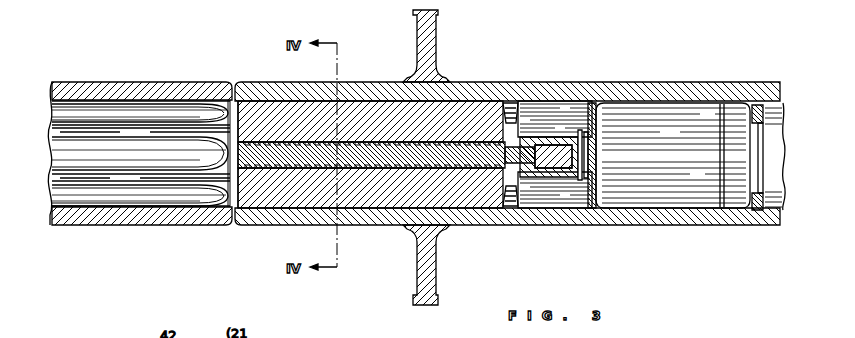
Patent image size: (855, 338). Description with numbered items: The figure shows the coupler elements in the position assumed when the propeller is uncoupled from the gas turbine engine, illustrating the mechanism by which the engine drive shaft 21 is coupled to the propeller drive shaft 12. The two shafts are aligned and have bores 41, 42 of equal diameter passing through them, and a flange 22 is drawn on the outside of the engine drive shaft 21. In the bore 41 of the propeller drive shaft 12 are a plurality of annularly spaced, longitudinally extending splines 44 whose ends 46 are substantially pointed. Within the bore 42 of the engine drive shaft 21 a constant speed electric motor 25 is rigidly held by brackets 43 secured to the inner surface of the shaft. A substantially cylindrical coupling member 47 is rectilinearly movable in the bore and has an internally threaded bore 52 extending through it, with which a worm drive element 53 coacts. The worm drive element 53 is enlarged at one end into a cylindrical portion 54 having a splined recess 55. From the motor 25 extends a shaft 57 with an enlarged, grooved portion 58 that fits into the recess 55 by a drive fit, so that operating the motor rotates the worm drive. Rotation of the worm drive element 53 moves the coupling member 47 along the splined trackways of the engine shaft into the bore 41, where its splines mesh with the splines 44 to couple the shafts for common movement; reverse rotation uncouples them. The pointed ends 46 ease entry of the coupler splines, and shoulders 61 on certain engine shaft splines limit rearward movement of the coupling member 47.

The propeller drive shaft 12 is at (98, 82).
The bore 41 is at (133, 183).
The splines 44 is at (148, 112).
The ends of splines 46 is at (216, 203).
The engine drive shaft 21 is at (518, 83).
The internally threaded bore 52 is at (278, 172).
The coupling member 47 is at (385, 200).
The worm drive element 53 is at (292, 146).
The mounting flange 22 is at (438, 30).
The shoulders 61 is at (492, 104).
The bore 42 is at (545, 193).
The recess 55 is at (567, 180).
The cylindrical portion 54 is at (541, 143).
The enlarged portion 58 is at (563, 130).
The shaft 57 is at (580, 180).
The brackets 43 is at (596, 102).
The constant speed electric motor 25 is at (667, 122).